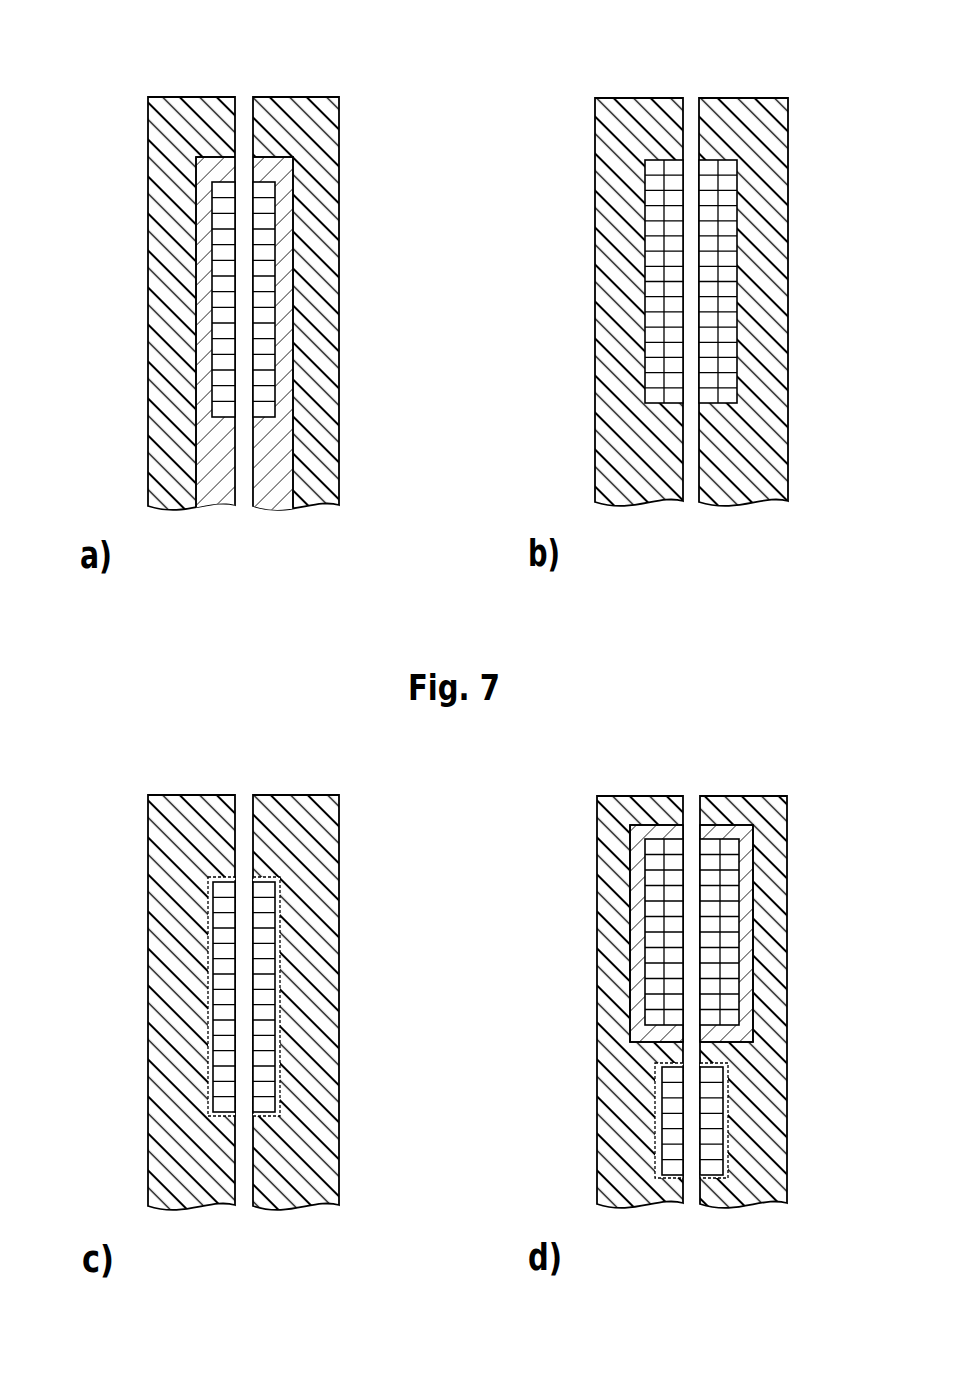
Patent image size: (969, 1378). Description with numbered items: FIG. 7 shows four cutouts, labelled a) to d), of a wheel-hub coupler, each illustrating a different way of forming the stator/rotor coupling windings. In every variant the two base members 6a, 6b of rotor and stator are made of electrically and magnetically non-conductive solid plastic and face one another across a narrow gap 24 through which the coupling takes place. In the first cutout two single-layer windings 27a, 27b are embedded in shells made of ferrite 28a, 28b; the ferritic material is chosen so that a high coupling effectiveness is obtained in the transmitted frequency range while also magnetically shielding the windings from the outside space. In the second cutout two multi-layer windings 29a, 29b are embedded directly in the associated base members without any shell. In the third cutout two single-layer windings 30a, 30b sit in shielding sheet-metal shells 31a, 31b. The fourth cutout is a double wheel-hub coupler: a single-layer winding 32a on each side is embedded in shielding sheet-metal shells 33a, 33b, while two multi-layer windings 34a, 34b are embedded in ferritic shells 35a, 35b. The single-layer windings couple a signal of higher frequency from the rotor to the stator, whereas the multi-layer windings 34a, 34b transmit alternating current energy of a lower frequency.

The base member 6a is at (184, 125).
The base member 6b is at (303, 125).
The gap between electrode halves 24 is at (243, 498).
The single-layer winding 27a is at (223, 237).
The single-layer winding 27b is at (262, 237).
The ferrite shell 28a is at (215, 483).
The ferrite shell 28b is at (272, 483).
The multi-layer winding 29a is at (666, 237).
The multi-layer winding 29b is at (706, 237).
The single-layer winding 30a is at (222, 920).
The single-layer winding 30b is at (265, 920).
The shielding sheet-metal shell 31a is at (205, 1058).
The shielding sheet-metal shell 31b is at (285, 1058).
The single-layer winding 32a is at (670, 1090).
The shielding sheet-metal shell 33a is at (642, 1162).
The shielding sheet-metal shell 33b is at (745, 1162).
The multi-layer winding 34a is at (670, 882).
The multi-layer winding 34b is at (712, 882).
The ferritic shell 35a is at (640, 990).
The ferritic shell 35b is at (745, 990).